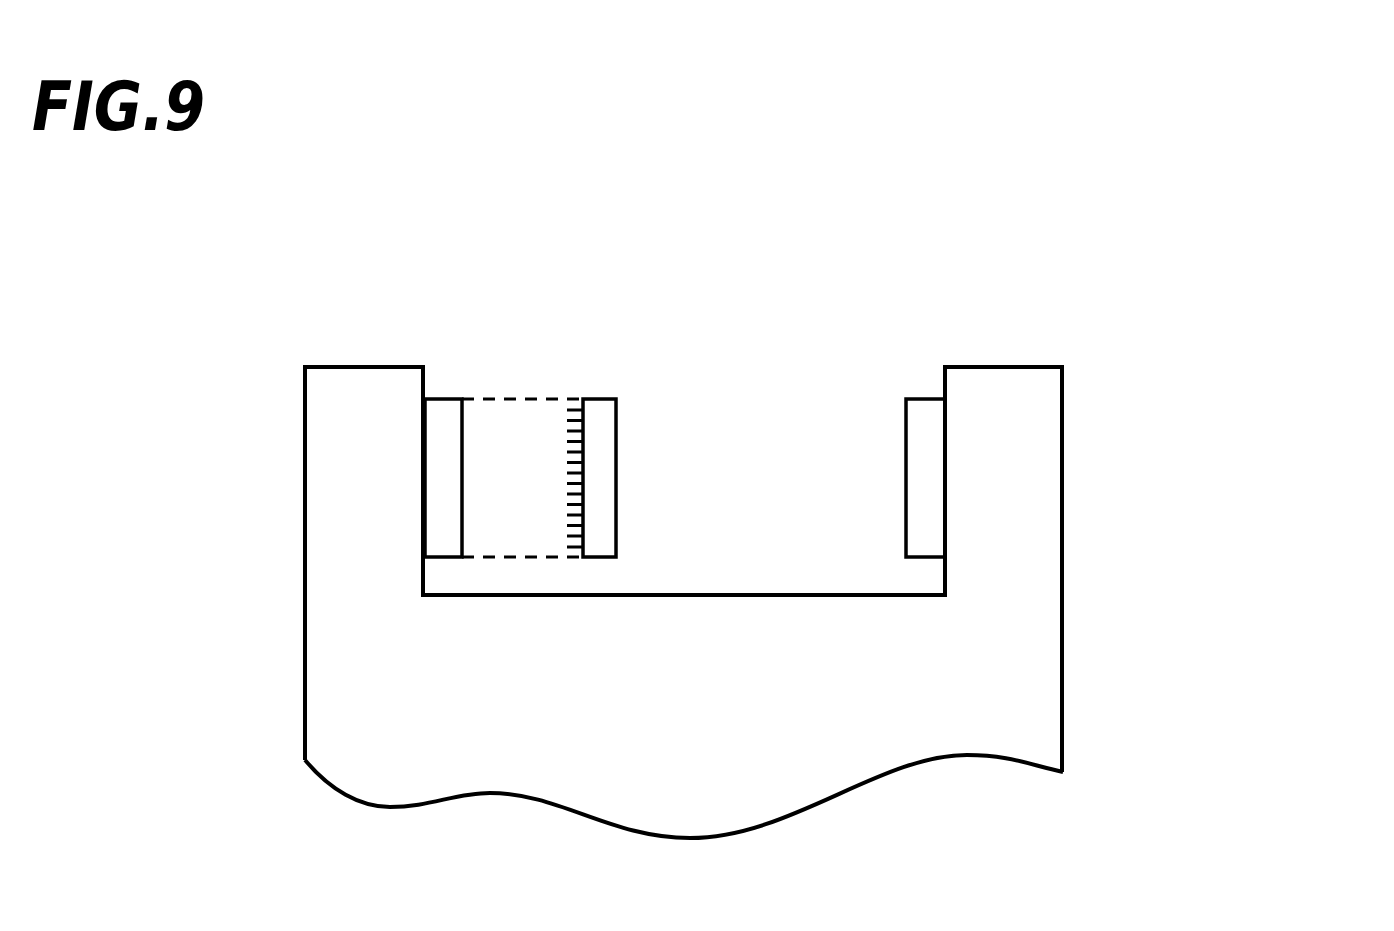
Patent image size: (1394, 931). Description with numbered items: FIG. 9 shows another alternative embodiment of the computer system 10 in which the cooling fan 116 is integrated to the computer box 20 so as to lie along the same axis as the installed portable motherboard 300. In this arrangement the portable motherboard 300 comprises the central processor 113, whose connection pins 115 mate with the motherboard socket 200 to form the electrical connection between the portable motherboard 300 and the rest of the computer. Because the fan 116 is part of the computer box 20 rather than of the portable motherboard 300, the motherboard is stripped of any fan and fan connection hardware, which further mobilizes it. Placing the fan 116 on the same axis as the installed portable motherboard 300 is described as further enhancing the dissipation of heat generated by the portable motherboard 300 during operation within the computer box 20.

The electrical discharge machining system 10 is at (1185, 300).
The computer box 20 is at (1062, 568).
The central processor 113 is at (608, 400).
The connection pins 115 is at (573, 557).
The cooling fan 116 is at (926, 410).
The motherboard socket 200 is at (450, 400).
The portable motherboard 300 is at (652, 416).